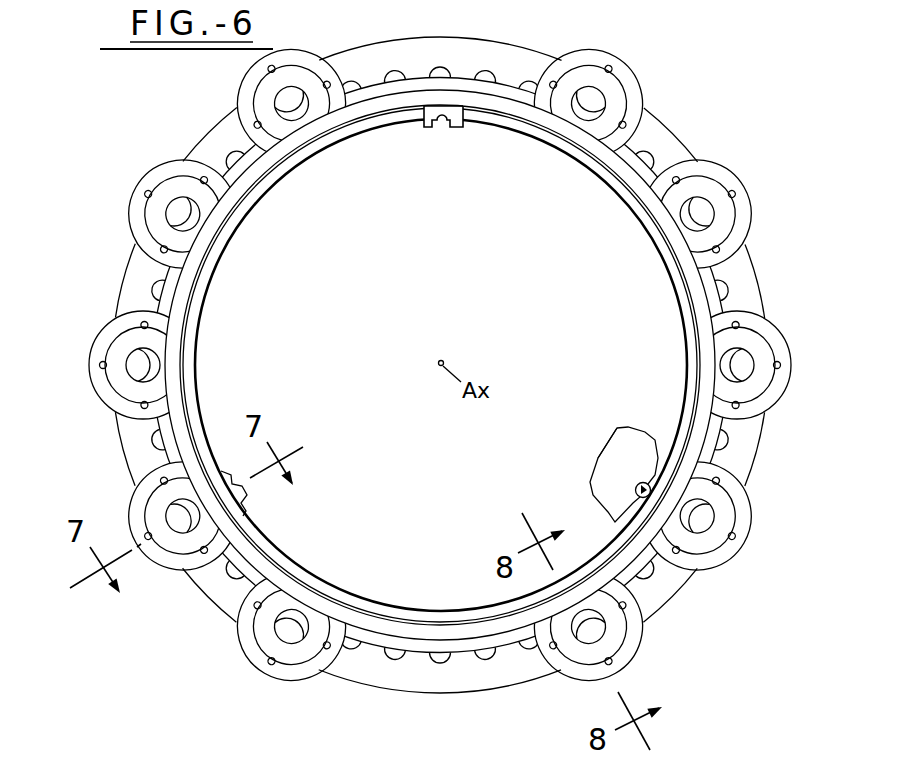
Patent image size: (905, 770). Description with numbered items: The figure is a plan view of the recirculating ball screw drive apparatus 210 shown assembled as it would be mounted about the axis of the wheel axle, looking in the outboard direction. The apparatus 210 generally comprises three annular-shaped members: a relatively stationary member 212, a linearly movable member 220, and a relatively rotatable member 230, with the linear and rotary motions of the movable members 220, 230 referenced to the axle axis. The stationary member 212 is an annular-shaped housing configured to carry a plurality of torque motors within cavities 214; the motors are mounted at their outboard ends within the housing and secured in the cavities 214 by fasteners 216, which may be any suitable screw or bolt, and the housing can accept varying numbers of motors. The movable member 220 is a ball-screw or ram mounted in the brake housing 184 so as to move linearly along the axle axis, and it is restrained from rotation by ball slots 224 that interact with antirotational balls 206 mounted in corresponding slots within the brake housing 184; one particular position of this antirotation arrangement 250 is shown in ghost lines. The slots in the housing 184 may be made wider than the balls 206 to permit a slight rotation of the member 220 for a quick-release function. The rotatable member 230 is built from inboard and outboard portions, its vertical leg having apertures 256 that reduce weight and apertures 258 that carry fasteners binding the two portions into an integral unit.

The brake housing 184 is at (631, 436).
The antirotational balls 206 is at (636, 488).
The recirculating ball screw drive apparatus 210 is at (668, 84).
The relatively stationary member 212 is at (703, 183).
The cavities 214 is at (311, 63).
The fasteners 216 is at (163, 230).
The linearly movable member 220 is at (641, 226).
The ball slots 224 is at (442, 127).
The relatively rotatable member 230 is at (600, 153).
The antirotation arrangement 250 is at (592, 449).
The apertures 256 is at (487, 67).
The apertures 258 is at (443, 664).